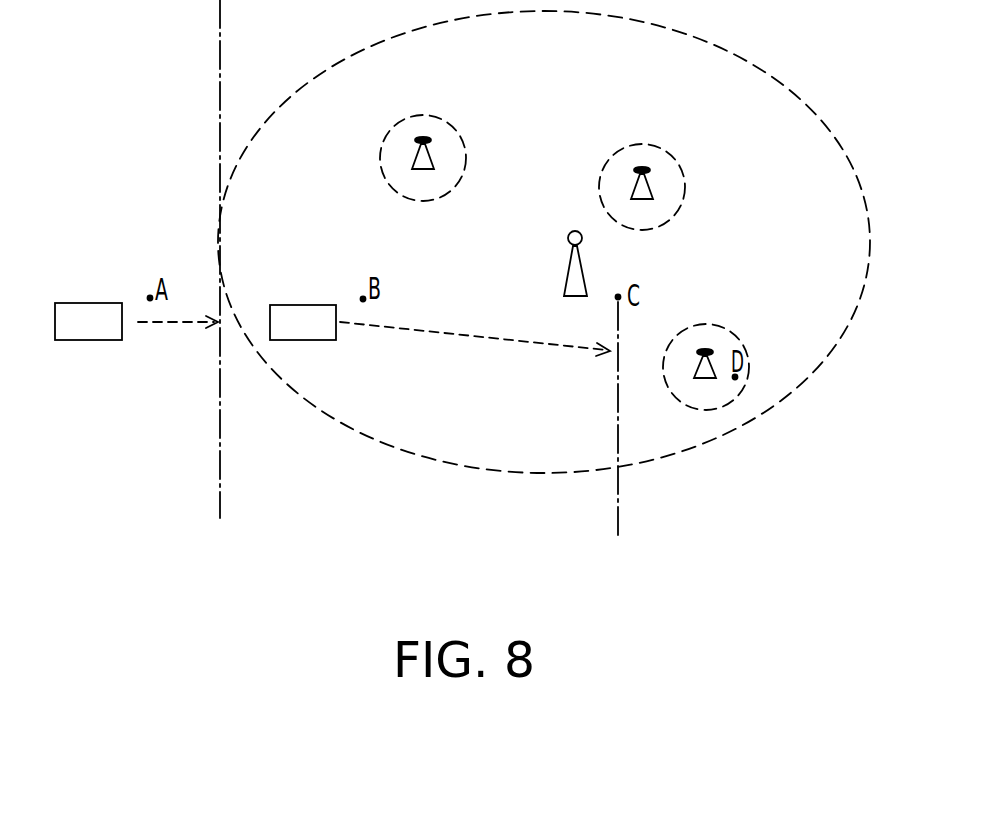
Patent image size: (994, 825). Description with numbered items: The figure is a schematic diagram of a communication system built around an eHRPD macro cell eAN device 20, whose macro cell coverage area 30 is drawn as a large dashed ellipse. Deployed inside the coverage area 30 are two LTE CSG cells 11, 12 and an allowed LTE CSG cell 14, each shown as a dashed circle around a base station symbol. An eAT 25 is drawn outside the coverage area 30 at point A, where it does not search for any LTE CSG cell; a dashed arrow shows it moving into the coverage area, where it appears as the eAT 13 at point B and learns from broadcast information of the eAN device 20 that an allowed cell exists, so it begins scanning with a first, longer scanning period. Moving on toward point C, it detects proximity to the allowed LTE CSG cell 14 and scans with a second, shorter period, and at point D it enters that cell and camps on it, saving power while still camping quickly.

The LTE CSG cell 11 is at (423, 117).
The LTE CSG cell 12 is at (648, 145).
The eAT 13 is at (319, 305).
The allowed LTE CSG cell 14 is at (712, 324).
The eAN device 20 is at (582, 270).
The eAT 25 is at (61, 303).
The coverage area 30 is at (851, 163).